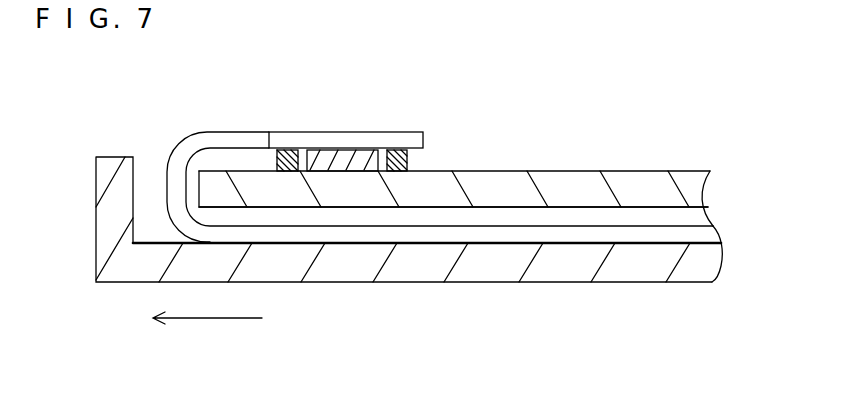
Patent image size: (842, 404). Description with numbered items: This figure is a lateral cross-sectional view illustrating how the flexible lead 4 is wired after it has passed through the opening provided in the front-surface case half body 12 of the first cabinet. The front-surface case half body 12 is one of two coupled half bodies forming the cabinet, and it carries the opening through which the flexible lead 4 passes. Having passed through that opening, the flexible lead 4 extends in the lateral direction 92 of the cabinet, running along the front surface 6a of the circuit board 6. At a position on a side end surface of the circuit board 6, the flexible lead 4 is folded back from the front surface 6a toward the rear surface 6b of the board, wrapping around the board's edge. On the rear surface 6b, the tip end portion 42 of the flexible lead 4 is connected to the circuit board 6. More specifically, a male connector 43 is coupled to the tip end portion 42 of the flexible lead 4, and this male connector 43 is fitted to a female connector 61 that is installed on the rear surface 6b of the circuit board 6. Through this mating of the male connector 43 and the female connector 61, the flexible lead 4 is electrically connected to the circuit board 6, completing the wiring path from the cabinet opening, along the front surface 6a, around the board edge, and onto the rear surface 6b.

The flexible lead 4 is at (493, 234).
The circuit board 6 is at (569, 185).
The front surface of the circuit board 6a is at (647, 209).
The rear surface of the circuit board 6b is at (657, 172).
The front-surface case half body 12 is at (560, 270).
The tip end portion 42 is at (322, 131).
The male connector 43 is at (369, 155).
The female connector 61 is at (408, 159).
The lateral direction 92 is at (212, 319).